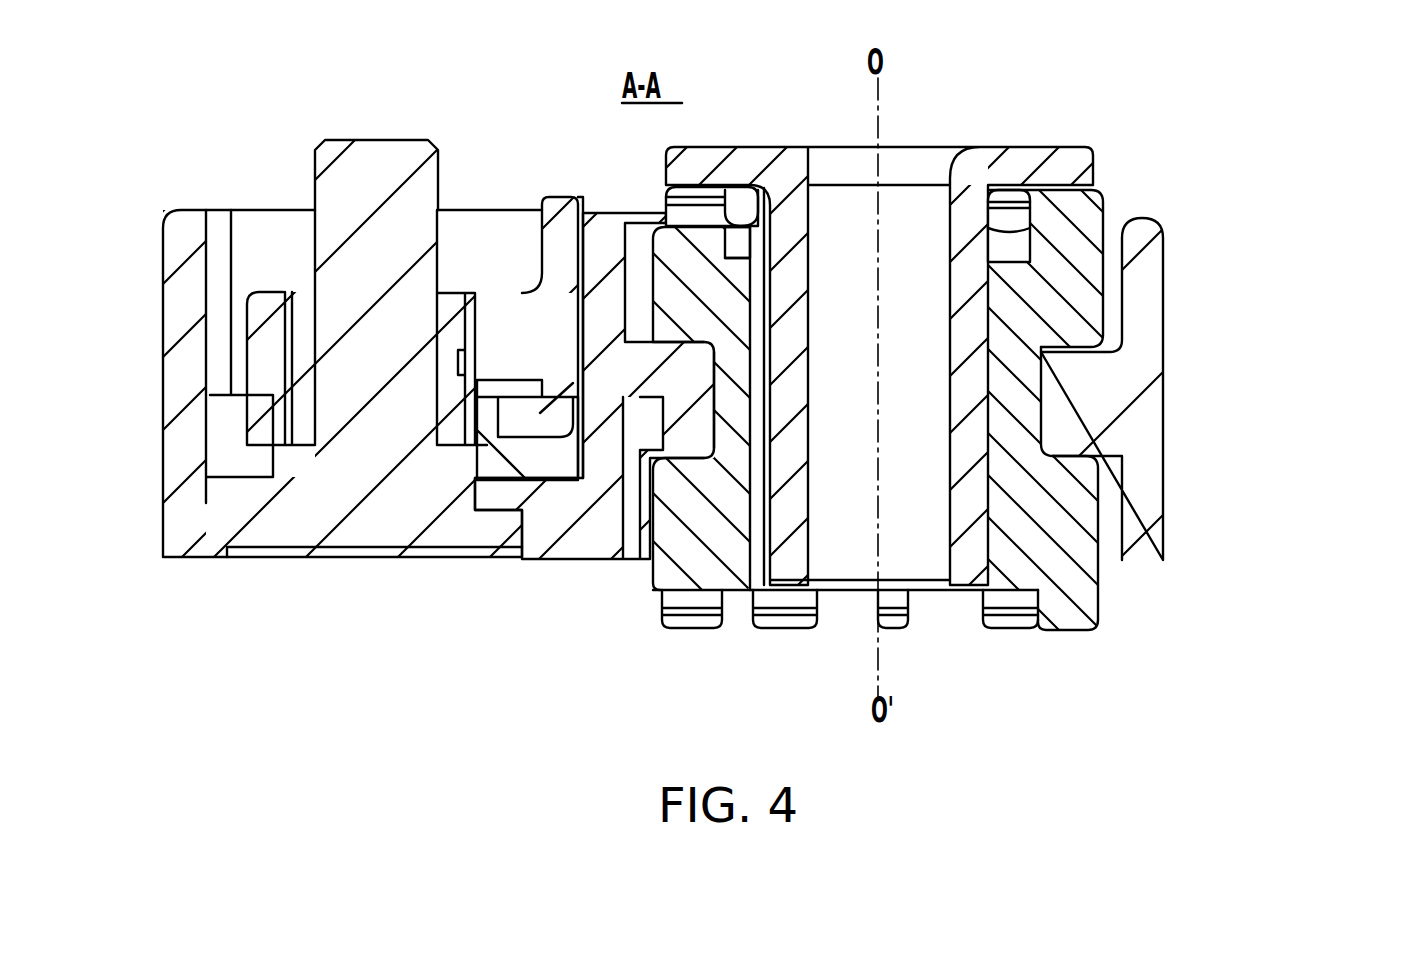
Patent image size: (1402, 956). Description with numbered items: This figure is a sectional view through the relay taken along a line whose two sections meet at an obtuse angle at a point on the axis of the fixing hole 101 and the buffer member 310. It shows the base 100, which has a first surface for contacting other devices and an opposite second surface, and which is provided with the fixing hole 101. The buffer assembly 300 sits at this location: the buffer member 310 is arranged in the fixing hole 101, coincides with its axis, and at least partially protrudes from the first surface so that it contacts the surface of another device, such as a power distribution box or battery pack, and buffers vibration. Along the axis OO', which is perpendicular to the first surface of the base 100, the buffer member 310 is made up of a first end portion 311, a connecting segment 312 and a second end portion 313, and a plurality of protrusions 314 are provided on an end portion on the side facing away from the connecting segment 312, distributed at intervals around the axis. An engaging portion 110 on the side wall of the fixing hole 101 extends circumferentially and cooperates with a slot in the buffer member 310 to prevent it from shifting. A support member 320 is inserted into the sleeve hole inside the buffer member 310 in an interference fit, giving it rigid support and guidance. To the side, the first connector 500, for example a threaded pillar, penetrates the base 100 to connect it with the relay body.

The base 100 is at (1132, 483).
The fixing hole 101 is at (1105, 578).
The engaging portion 110 is at (692, 422).
The buffer assembly 300 is at (1011, 398).
The buffer member 310 is at (980, 453).
The first end portion 311 is at (1080, 265).
The connecting segment 312 is at (1030, 392).
The second end portion 313 is at (1077, 495).
The protrusions 314 is at (780, 615).
The support member 320 is at (1017, 170).
The first connector 500 is at (383, 488).